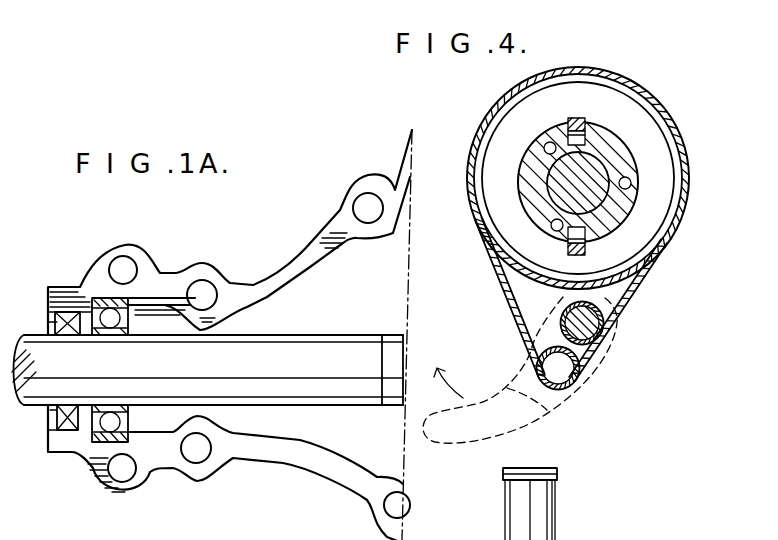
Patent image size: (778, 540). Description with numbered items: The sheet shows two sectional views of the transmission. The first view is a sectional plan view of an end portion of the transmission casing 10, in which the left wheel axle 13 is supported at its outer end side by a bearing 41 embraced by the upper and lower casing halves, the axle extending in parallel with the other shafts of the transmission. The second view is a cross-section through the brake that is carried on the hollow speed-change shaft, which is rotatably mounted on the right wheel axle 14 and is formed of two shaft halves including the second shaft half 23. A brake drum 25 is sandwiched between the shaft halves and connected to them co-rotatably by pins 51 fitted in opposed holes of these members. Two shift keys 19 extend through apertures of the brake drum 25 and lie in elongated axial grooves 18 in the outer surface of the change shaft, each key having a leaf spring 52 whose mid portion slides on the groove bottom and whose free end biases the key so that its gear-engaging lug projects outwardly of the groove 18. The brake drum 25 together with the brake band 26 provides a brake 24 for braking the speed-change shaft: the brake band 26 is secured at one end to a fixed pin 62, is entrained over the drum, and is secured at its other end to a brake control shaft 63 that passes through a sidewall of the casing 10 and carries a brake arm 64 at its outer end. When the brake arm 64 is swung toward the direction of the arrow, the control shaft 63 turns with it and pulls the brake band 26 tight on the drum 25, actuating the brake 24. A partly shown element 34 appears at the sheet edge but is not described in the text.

In FIG. 1A, the transmission casing 10 is at (315, 257).
In FIG. 1A, the left wheel axle 13 is at (253, 367).
In FIG. 1A, the bearing 41 is at (134, 302).
In FIG. 4, the right wheel axle 14 is at (635, 213).
In FIG. 4, the elongated axial groove 18 is at (606, 130).
In FIG. 4, the shift key 19 is at (568, 128).
In FIG. 4, the second shaft half 23 is at (519, 200).
In FIG. 4, the brake 24 is at (675, 268).
In FIG. 4, the brake drum 25 is at (490, 118).
In FIG. 4, the brake band 26 is at (647, 92).
In FIG. 4, the pin 51 is at (544, 149).
In FIG. 4, the leaf spring 52 is at (586, 132).
In FIG. 4, the fixed pin 62 is at (562, 371).
In FIG. 4, the brake control shaft 63 is at (603, 340).
In FIG. 4, the brake arm 64 is at (548, 411).
In FIG. 4, the cylinder 34 is at (580, 536).